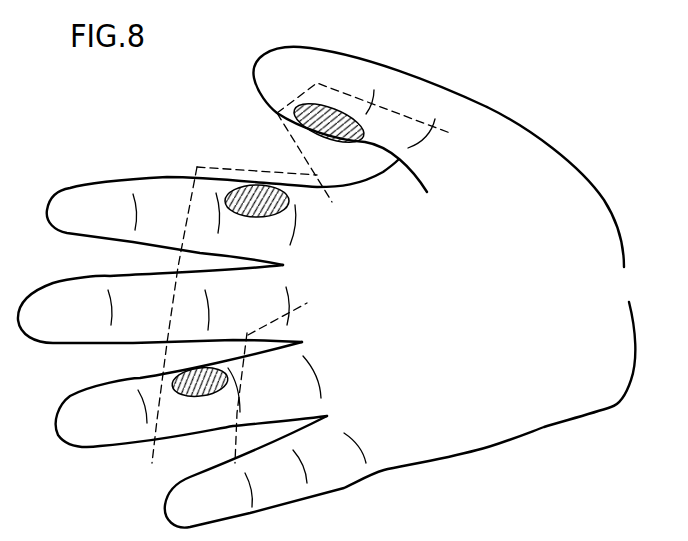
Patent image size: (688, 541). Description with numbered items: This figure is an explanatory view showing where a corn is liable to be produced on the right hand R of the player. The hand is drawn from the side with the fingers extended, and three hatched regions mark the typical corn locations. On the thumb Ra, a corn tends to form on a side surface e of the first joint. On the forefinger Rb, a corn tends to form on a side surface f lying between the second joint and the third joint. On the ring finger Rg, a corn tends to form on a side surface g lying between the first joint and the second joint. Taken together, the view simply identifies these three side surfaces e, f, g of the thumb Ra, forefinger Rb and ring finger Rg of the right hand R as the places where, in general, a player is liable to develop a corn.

The right hand R is at (431, 85).
The thumb Ra is at (284, 62).
The forefinger Rb is at (88, 187).
The ring finger Rg is at (90, 440).
The side surface of the first joint of the thumb e is at (333, 108).
The side surface between the second joint and the third joint of the forefinger f is at (248, 186).
The side surface between the first joint and the second joint of the ring finger g is at (195, 396).